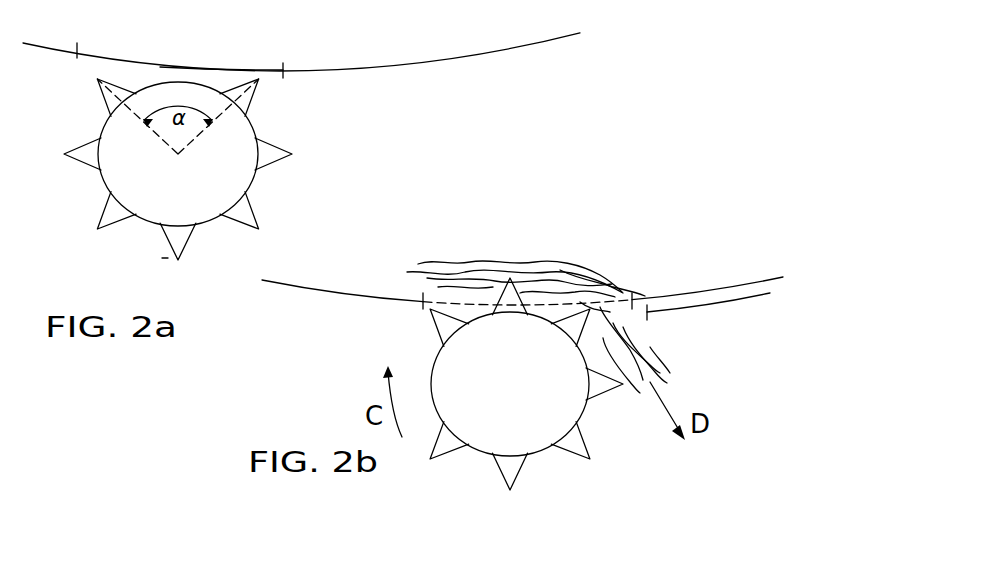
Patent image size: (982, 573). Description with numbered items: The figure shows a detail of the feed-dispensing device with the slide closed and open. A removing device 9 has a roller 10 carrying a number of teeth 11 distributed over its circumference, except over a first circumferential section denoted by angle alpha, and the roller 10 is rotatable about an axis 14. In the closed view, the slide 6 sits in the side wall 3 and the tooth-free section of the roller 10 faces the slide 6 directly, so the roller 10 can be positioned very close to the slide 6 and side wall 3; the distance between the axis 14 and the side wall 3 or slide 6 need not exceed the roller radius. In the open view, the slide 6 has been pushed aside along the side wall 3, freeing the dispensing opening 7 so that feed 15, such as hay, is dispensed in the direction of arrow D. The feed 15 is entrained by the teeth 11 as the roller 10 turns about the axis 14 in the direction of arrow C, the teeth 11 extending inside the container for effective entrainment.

In FIG. 2a, the side wall 3 is at (345, 69).
In FIG. 2b, the side wall 3 is at (373, 297).
In FIG. 2a, the slide 6 is at (212, 69).
In FIG. 2b, the slide 6 is at (703, 303).
In FIG. 2b, the dispensing opening 7 is at (563, 306).
In FIG. 2a, the removing device 9 is at (224, 201).
In FIG. 2b, the removing device 9 is at (526, 393).
In FIG. 2a, the roller 10 is at (233, 142).
In FIG. 2b, the roller 10 is at (488, 441).
In FIG. 2a, the teeth 11 is at (248, 220).
In FIG. 2b, the teeth 11 is at (591, 417).
In FIG. 2a, the axis 14 is at (178, 154).
In FIG. 2b, the axis 14 is at (510, 384).
In FIG. 2b, the feed 15 is at (502, 265).